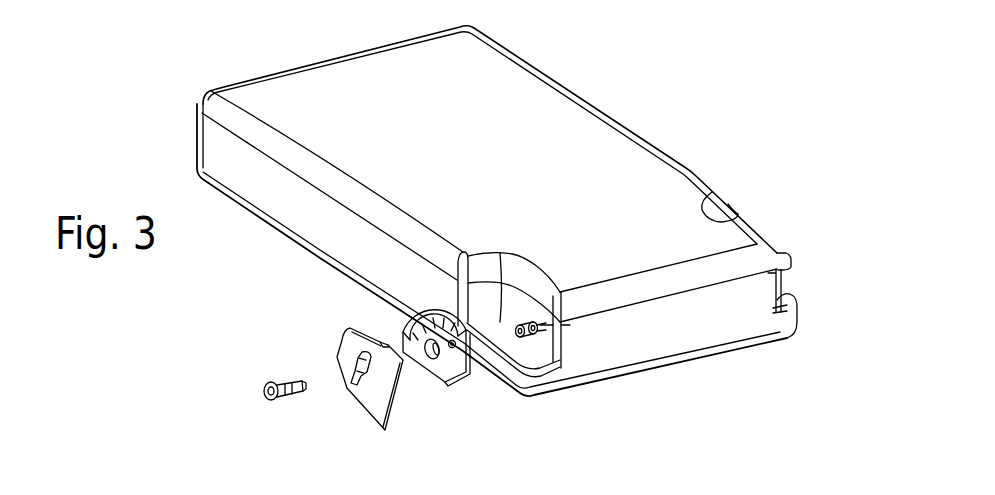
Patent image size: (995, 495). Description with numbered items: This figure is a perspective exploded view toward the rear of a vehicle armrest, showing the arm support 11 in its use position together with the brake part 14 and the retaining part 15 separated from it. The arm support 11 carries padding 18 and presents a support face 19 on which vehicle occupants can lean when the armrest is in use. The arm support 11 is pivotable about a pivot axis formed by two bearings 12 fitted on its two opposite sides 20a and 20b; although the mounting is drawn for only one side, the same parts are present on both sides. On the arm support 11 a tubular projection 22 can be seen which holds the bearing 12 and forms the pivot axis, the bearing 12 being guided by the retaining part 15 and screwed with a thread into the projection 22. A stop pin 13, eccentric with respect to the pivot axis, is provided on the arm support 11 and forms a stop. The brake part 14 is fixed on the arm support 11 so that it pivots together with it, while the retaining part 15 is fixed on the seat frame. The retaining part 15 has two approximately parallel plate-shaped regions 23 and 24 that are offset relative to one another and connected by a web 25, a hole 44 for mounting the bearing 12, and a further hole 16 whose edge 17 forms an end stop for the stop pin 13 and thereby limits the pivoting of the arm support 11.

The arm support 11 is at (525, 76).
The bearing 12 is at (259, 392).
The stop pin 13 is at (777, 251).
The brake part 14 is at (448, 368).
The retaining part 15 is at (370, 405).
The hole 16 is at (355, 385).
The edge 17 is at (362, 364).
The padding 18 is at (273, 192).
The support face 19 is at (413, 110).
The side 20a is at (519, 272).
The side 20b is at (709, 222).
The tubular projection 22 is at (523, 344).
The plate-shaped region 23 is at (348, 342).
The plate-shaped region 24 is at (382, 406).
The web 25 is at (382, 340).
The hole 44 is at (350, 377).